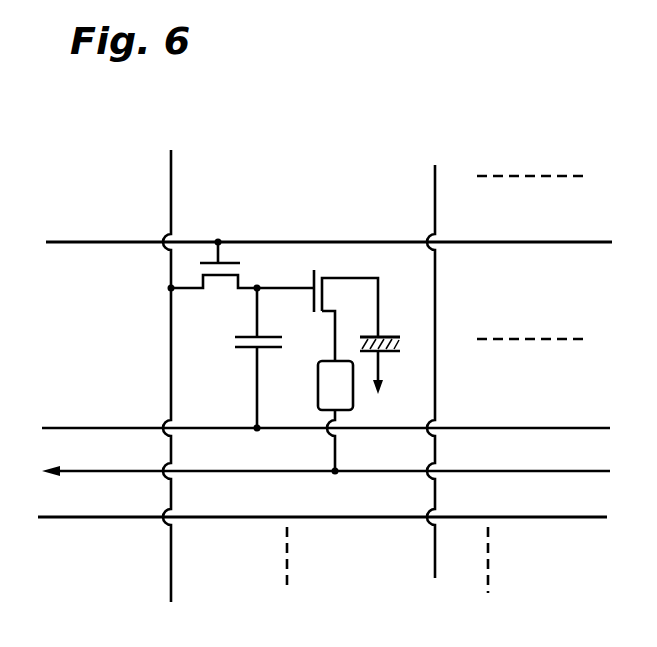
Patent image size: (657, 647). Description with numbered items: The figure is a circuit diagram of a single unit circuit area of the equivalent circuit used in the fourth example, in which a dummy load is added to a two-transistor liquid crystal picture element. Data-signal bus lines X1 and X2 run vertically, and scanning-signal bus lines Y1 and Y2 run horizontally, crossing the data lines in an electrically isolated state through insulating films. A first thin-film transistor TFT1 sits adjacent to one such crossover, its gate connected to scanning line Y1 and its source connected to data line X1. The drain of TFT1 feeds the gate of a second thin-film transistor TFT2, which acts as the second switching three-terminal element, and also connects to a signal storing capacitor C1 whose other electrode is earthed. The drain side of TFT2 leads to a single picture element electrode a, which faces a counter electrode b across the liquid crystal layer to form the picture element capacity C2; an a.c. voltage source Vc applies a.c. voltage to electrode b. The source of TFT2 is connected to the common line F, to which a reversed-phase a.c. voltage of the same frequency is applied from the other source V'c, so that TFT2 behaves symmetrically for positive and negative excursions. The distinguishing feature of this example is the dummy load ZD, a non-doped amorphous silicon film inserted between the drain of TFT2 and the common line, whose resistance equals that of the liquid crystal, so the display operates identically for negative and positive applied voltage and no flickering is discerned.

The electrode line X1 is at (167, 361).
The electrode line X2 is at (433, 351).
The electrode line Y1 is at (310, 238).
The electrode line Y2 is at (305, 514).
The common electrode line E is at (310, 419).
The a.c. voltage source V'c is at (306, 467).
The common line F is at (88, 471).
The first TFT TFT1 is at (241, 279).
The second TFT TFT2 is at (338, 303).
The signal storing capacitor C1 is at (262, 358).
The picture element capacity C2 is at (389, 326).
The picture element electrode a is at (386, 334).
The counter electrode b is at (388, 352).
The dummy load ZD is at (335, 418).
The a.c. voltage source Vc is at (392, 383).